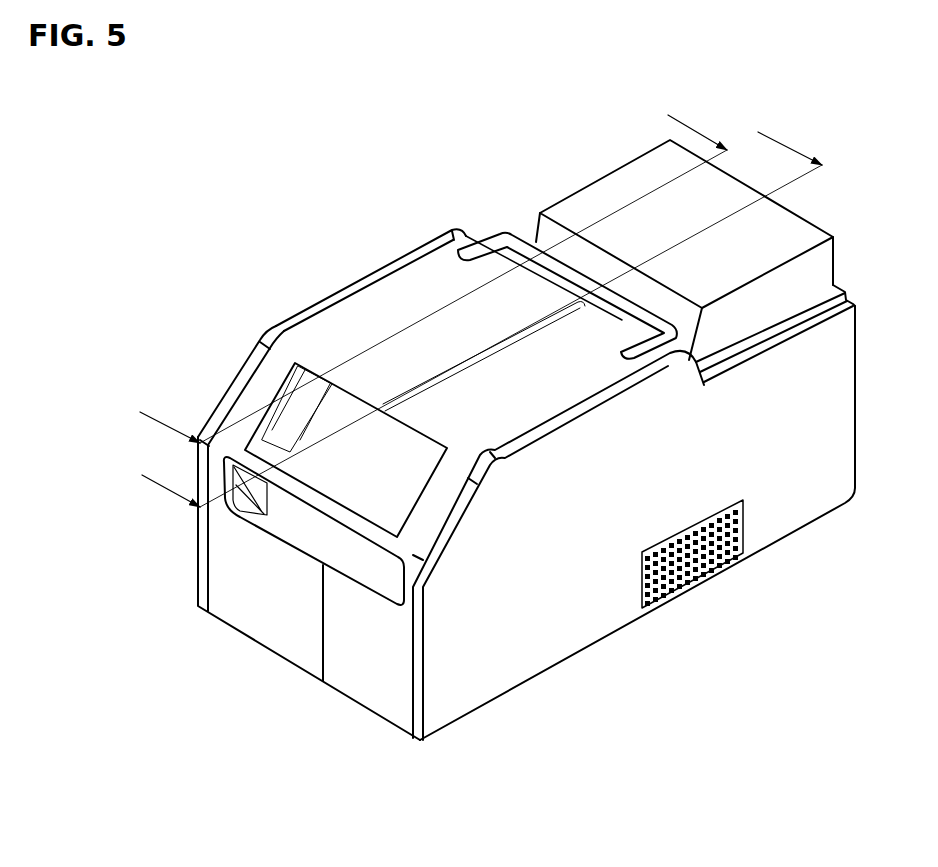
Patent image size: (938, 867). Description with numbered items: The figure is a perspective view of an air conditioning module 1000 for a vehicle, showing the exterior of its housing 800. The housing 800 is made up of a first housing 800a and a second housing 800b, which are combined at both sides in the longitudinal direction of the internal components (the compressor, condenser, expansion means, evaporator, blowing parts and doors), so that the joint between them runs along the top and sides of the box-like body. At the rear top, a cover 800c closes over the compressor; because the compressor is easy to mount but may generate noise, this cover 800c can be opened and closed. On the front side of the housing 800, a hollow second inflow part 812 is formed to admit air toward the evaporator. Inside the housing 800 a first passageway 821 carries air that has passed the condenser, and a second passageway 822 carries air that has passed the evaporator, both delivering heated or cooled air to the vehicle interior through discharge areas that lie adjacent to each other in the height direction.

The air conditioning module 1000 is at (302, 108).
The housing 800 is at (572, 98).
The first housing 800a is at (437, 270).
The second housing 800b is at (532, 355).
The cover 800c is at (573, 210).
The second inflow part 812 is at (713, 572).
The first passageway 821 is at (323, 526).
The second passageway 822 is at (374, 430).